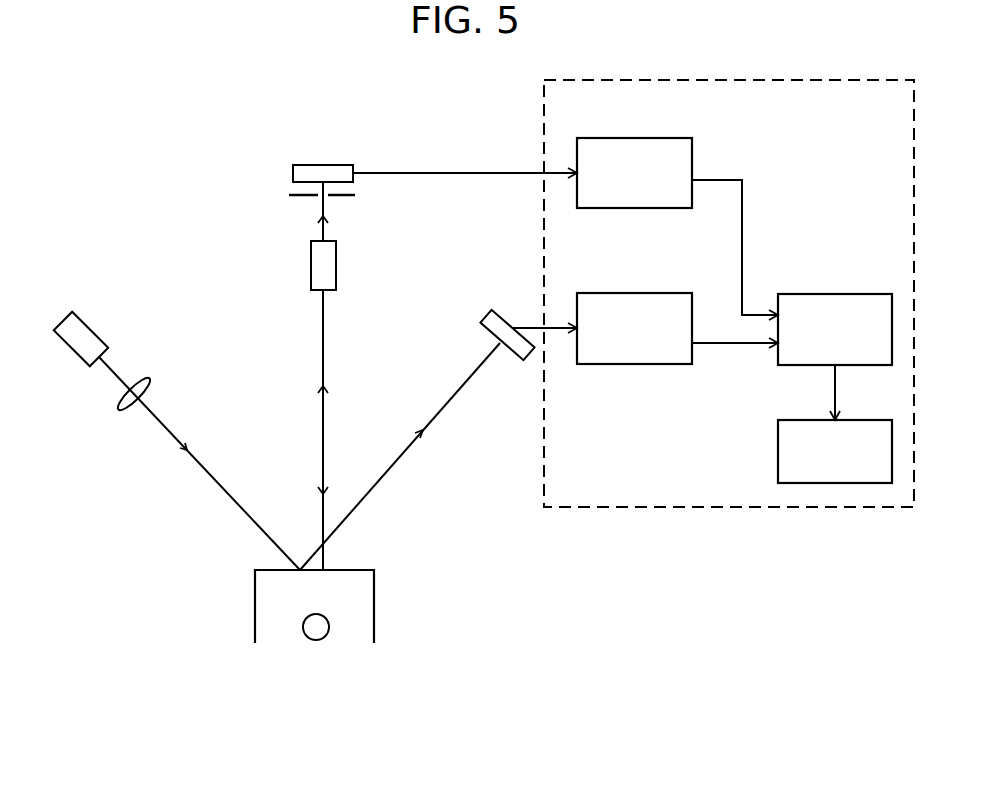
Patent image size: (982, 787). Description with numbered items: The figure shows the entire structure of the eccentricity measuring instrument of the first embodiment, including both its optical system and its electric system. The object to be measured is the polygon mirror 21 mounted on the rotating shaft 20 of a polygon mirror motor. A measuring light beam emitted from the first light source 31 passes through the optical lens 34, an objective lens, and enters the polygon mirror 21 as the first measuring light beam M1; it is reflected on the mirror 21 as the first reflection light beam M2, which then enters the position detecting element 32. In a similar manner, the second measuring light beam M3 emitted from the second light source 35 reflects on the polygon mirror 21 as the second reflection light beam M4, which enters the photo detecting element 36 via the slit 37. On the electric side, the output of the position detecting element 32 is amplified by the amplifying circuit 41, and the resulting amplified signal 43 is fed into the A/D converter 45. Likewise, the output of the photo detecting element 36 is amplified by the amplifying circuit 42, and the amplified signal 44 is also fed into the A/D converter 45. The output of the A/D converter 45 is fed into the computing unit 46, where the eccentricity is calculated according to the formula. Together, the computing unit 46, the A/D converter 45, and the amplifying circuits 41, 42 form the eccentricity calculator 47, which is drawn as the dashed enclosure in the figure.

The rotating shaft 20 is at (328, 618).
The polygon mirror 21 is at (353, 580).
The first light source 31 is at (83, 330).
The position detecting element 32 is at (502, 328).
The optical lens 34 is at (143, 385).
The second light source 35 is at (327, 273).
The photo detecting element 36 is at (343, 165).
The slit 37 is at (355, 195).
The amplifying circuit 41 is at (672, 292).
The amplifying circuit 42 is at (672, 137).
The amplified signal 43 is at (720, 345).
The amplified signal 44 is at (742, 242).
The A/D converter 45 is at (868, 293).
The computing unit 46 is at (875, 420).
The eccentricity calculator 47 is at (767, 510).
The first measuring light beam M1 is at (173, 433).
The first reflection light beam M2 is at (475, 377).
The second measuring light beam M3 is at (368, 376).
The second reflection light beam M4 is at (327, 408).